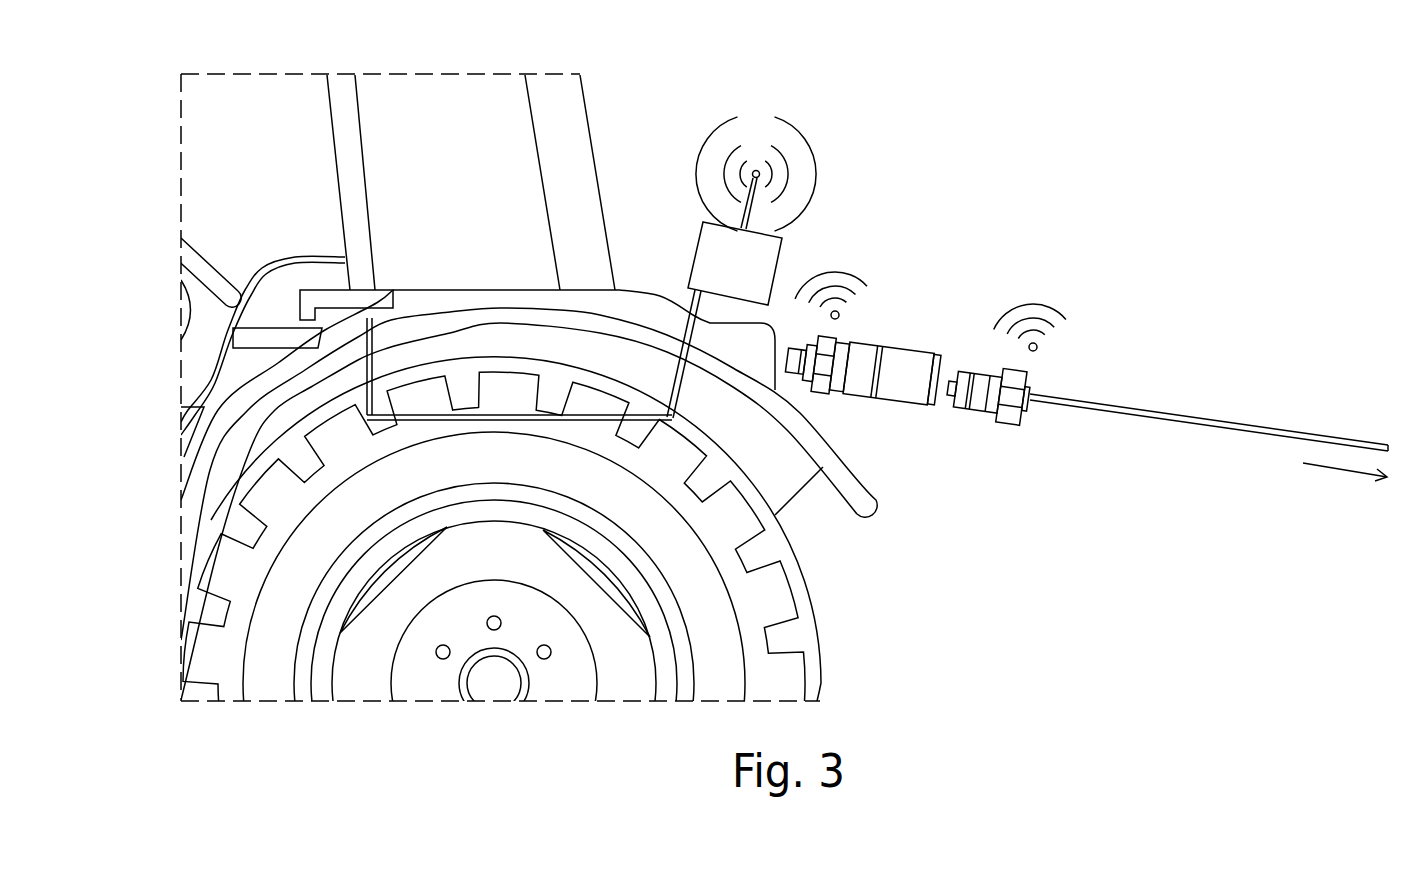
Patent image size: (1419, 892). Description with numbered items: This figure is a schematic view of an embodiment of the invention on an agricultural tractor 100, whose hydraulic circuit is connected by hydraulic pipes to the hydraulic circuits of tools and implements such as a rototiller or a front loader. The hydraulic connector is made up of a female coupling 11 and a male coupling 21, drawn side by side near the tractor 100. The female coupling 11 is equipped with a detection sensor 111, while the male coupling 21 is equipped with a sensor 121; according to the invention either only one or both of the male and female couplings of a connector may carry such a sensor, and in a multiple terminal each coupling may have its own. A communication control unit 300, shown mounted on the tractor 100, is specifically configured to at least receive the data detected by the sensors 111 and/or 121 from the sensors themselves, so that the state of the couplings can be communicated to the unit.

The communication control unit 300 is at (690, 248).
The detection sensor 111 is at (838, 272).
The female coupling 11 is at (903, 347).
The sensor 121 is at (1040, 303).
The male coupling 21 is at (1040, 383).
The agricultural tractor 100 is at (868, 490).